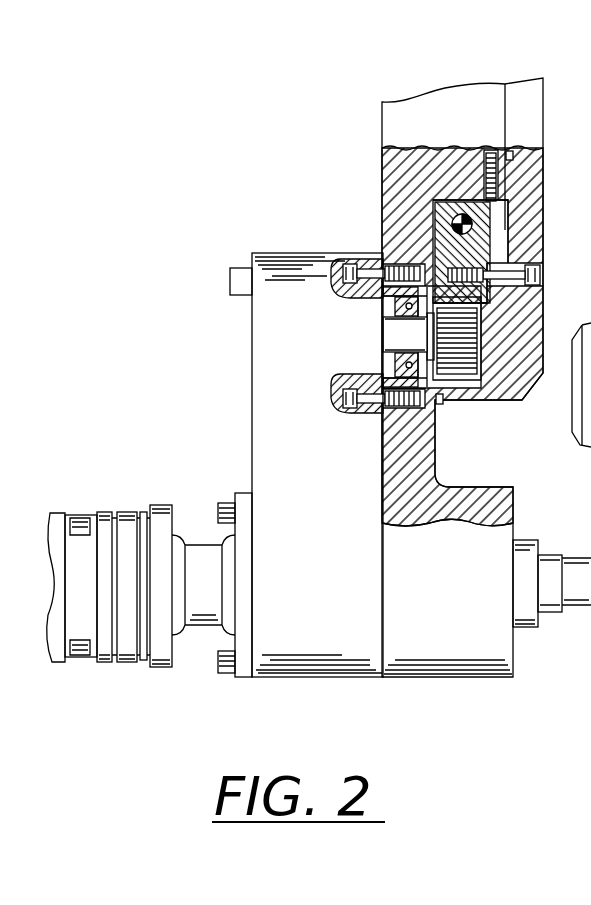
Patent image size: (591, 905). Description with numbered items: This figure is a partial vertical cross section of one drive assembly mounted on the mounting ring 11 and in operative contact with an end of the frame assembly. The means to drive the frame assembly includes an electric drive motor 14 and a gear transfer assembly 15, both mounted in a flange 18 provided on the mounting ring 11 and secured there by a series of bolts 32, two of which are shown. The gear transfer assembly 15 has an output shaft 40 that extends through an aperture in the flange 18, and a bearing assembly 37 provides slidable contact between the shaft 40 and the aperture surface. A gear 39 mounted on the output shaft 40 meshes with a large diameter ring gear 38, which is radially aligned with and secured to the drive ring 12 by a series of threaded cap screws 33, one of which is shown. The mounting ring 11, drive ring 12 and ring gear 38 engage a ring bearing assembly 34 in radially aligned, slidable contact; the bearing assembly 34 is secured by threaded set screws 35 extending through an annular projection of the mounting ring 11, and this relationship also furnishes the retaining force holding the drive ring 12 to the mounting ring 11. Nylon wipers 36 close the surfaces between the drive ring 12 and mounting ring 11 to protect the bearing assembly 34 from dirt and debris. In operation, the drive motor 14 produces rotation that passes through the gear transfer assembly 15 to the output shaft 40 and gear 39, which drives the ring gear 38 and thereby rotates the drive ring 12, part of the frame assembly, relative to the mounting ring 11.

The mounting ring 11 is at (423, 96).
The drive ring 12 is at (543, 218).
The electric drive motor 14 is at (55, 518).
The gear transfer assembly 15 is at (292, 440).
The flange 18 is at (435, 608).
The bolts 32 is at (376, 339).
The threaded cap screws 33 is at (540, 272).
The ring bearing assembly 34 is at (444, 220).
The threaded set screws 35 is at (485, 182).
The nylon wipers 36 is at (513, 157).
The bearing assembly 37 is at (397, 372).
The ring gear 38 is at (470, 251).
The gear 39 is at (462, 340).
The output shaft 40 is at (411, 345).